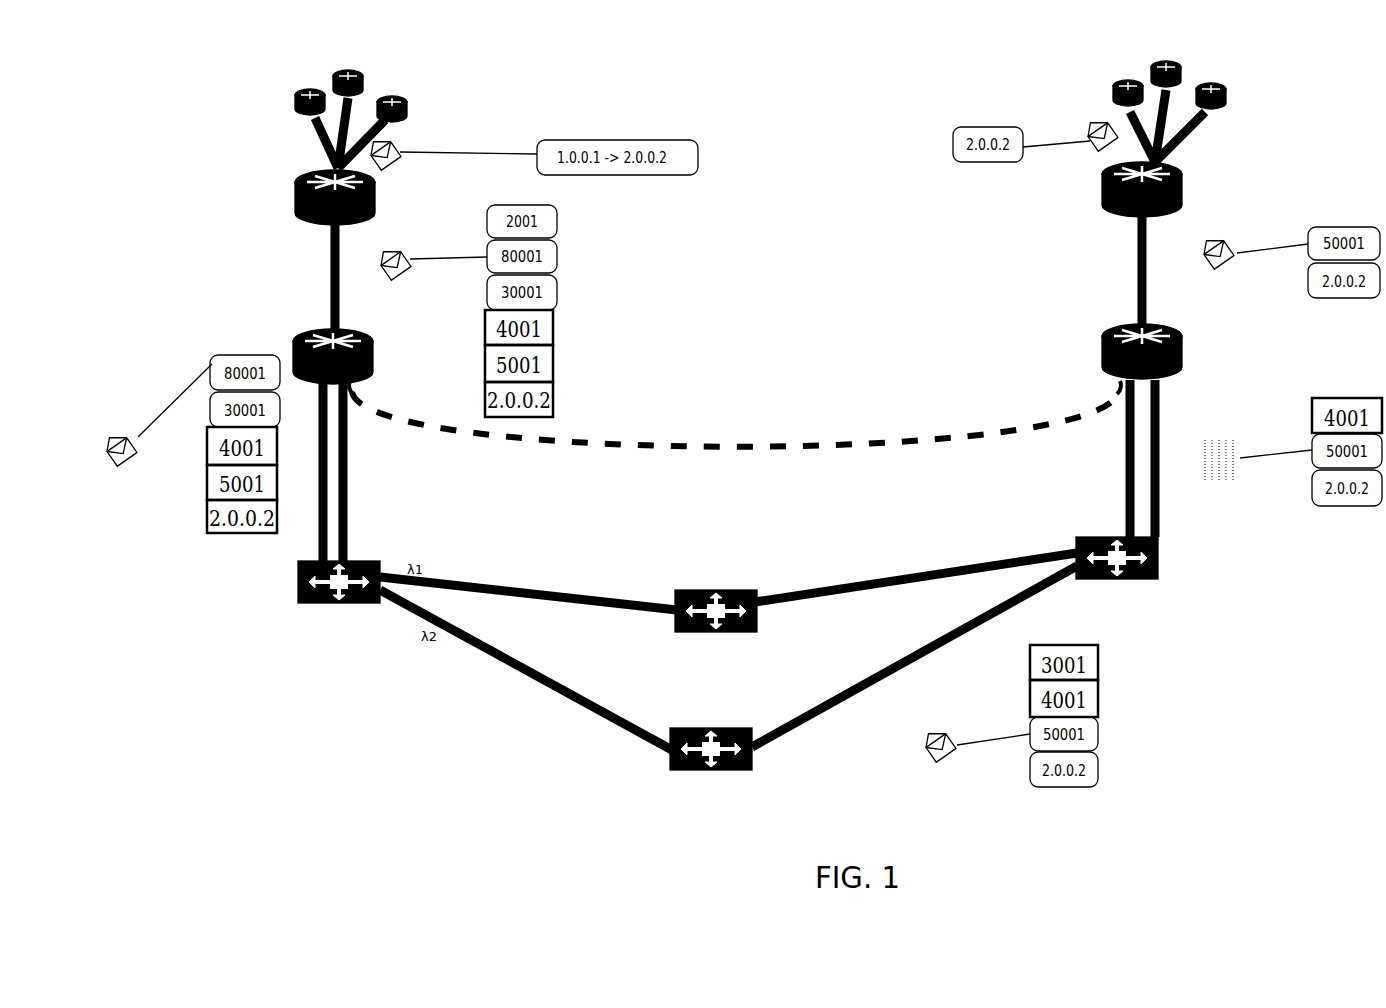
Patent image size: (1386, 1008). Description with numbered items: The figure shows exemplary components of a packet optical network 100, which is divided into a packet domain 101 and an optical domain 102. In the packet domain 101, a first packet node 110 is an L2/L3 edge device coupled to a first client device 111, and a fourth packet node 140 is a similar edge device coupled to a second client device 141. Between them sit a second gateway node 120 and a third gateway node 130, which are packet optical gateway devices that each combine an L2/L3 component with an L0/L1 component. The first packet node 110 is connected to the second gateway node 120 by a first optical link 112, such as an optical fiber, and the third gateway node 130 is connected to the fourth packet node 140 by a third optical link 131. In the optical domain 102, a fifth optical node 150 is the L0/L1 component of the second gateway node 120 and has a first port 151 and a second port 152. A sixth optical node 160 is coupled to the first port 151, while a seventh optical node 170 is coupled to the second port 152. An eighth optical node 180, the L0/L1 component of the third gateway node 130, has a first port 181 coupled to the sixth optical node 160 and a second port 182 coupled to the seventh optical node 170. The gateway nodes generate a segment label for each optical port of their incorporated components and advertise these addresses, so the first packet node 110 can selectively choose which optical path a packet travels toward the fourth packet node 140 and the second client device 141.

The packet optical network 100 is at (1372, 70).
The packet domain 101 is at (315, 245).
The optical domain 102 is at (338, 712).
The first packet node 110 is at (352, 197).
The first client device 111 is at (393, 94).
The first optical link 112 is at (333, 288).
The second gateway node 120 is at (352, 356).
The third gateway node 130 is at (1158, 351).
The third optical link 131 is at (1138, 266).
The fourth packet node 140 is at (1159, 189).
The second client device 141 is at (1129, 82).
The fifth optical node 150 is at (298, 587).
The first port 151 is at (387, 543).
The second port 152 is at (278, 546).
The sixth optical node 160 is at (711, 590).
The seventh optical node 170 is at (711, 728).
The eighth optical node 180 is at (1158, 561).
The first port 181 is at (1202, 522).
The second port 182 is at (1084, 522).